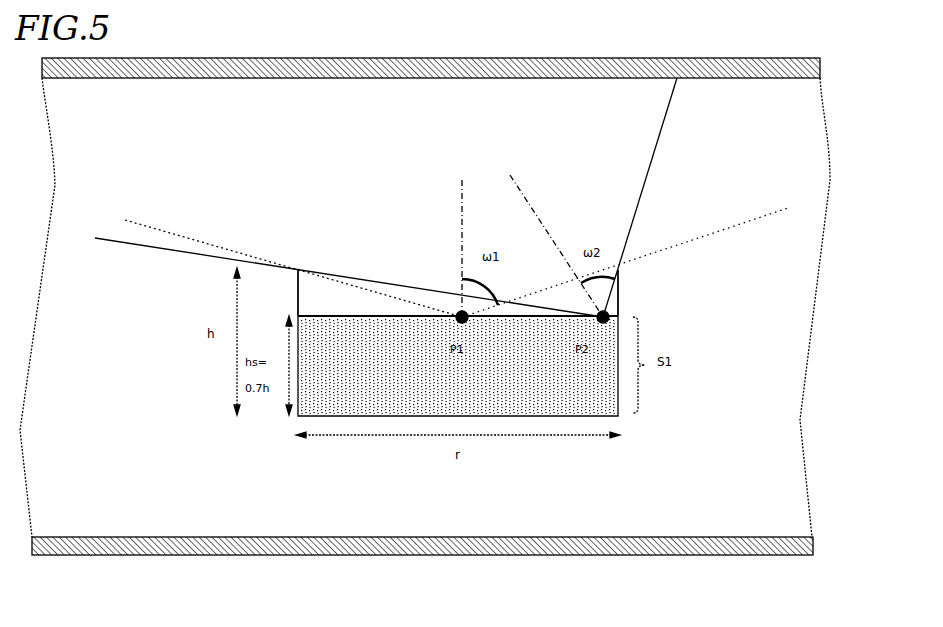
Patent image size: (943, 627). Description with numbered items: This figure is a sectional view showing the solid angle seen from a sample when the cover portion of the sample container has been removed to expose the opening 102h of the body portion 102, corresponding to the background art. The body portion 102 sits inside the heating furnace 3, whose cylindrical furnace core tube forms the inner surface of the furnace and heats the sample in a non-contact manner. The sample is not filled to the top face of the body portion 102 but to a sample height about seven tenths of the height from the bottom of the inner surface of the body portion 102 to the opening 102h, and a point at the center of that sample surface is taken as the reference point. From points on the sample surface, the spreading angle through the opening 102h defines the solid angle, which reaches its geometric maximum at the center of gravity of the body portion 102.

The heating furnace 3 is at (170, 78).
The body portion 102 is at (677, 303).
The opening 102h is at (432, 282).